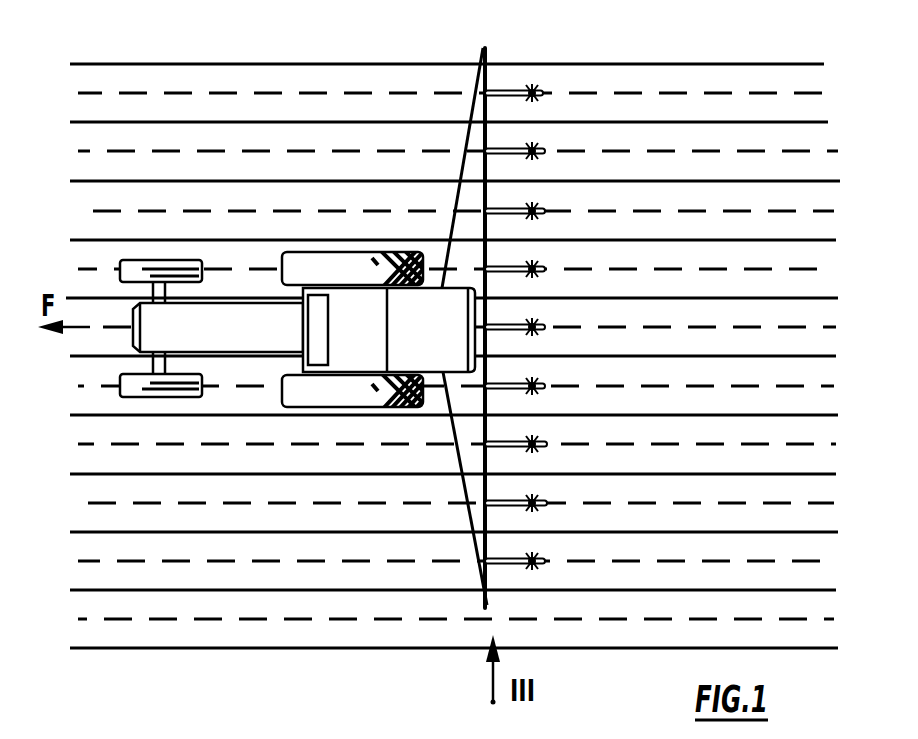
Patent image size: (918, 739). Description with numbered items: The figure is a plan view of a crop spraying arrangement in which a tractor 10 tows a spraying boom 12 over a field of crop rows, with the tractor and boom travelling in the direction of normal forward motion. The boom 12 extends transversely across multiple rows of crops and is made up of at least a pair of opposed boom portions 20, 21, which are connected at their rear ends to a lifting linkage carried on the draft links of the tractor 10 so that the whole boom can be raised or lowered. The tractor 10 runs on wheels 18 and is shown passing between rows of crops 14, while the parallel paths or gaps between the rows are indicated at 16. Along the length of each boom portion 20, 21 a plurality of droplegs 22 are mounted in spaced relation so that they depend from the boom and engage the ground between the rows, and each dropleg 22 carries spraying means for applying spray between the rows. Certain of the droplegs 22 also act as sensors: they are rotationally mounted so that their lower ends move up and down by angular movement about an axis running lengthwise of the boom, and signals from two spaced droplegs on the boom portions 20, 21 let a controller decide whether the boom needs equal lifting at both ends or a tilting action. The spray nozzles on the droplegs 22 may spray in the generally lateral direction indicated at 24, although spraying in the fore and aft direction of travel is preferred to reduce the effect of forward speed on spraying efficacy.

The tractor 10 is at (229, 277).
The boom 12 is at (460, 128).
The crop rows 14 is at (783, 150).
The inter-row paths 16 is at (846, 90).
The tractor wheels 18 is at (148, 257).
The boom portion 20 is at (473, 543).
The boom portion 21 is at (455, 203).
The dropleg 22 is at (543, 212).
The lateral spraying direction 24 is at (550, 147).